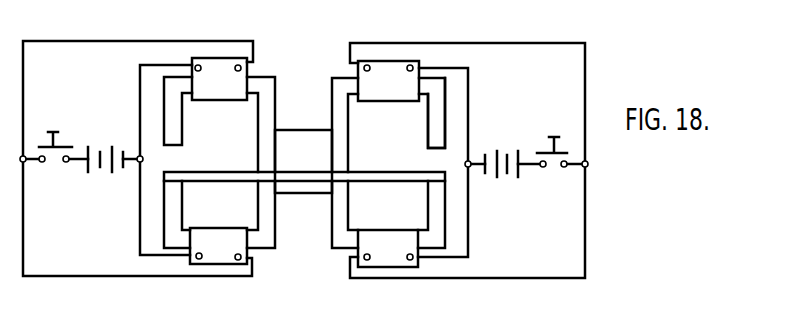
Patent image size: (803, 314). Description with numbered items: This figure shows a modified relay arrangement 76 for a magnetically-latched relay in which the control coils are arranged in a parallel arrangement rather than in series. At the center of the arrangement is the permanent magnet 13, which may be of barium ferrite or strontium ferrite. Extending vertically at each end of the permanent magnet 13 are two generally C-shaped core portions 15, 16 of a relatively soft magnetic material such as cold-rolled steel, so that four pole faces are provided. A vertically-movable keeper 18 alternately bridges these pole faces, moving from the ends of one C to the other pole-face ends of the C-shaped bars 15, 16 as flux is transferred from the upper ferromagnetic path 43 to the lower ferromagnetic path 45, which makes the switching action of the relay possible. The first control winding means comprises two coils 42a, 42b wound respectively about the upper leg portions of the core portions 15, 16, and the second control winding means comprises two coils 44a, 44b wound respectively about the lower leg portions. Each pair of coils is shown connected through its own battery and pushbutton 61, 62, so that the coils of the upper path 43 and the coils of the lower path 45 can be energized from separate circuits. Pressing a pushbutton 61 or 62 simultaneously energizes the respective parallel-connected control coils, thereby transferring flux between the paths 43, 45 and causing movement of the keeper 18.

The relay arrangement 76 is at (312, 51).
The permanent magnet 13 is at (305, 130).
The keeper 18 is at (225, 172).
The C-shaped core portion 15 is at (183, 132).
The C-shaped core portion 16 is at (427, 127).
The lower ferromagnetic path 45 is at (267, 237).
The upper ferromagnetic path 43 is at (438, 105).
The coil 42a is at (217, 82).
The coil 42b is at (402, 90).
The coil 44a is at (212, 237).
The coil 44b is at (383, 237).
The left push-button switch 61 is at (62, 146).
The right push-button switch 62 is at (545, 147).